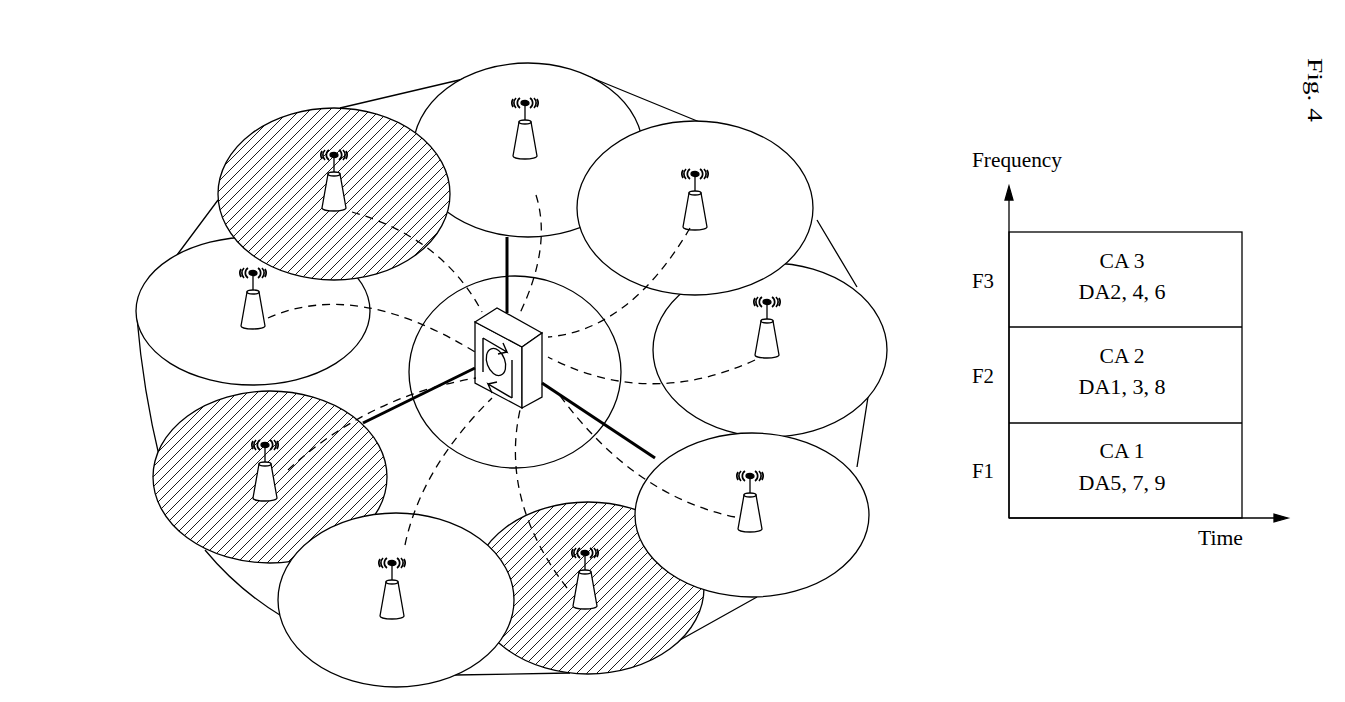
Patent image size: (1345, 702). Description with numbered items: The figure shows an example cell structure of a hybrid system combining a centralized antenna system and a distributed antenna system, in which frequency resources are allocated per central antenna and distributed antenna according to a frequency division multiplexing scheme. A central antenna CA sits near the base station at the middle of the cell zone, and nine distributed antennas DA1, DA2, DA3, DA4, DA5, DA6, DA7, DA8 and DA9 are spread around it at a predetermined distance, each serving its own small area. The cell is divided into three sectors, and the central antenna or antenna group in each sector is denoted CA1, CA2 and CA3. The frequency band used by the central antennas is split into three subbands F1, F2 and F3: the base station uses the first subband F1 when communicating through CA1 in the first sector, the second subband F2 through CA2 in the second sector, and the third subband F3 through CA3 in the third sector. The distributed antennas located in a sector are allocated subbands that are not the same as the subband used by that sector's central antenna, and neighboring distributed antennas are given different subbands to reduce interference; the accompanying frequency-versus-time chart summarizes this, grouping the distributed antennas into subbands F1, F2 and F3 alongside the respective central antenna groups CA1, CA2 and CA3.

The distributed antenna DA1 is at (528, 150).
The distributed antenna DA2 is at (334, 194).
The distributed antenna DA3 is at (253, 311).
The distributed antenna 4 (cell) DA4 is at (270, 477).
The distributed antenna 5 (cell) DA5 is at (396, 600).
The distributed antenna 6 (cell) DA6 is at (588, 588).
The distributed antenna 7 (cell) DA7 is at (752, 515).
The distributed antenna 8 (cell) DA8 is at (770, 350).
The distributed antenna 9 (cell) DA9 is at (695, 208).
The central antenna CA is at (559, 352).
The first central antenna CA1 is at (375, 282).
The second central antenna CA2 is at (486, 493).
The third central antenna CA3 is at (605, 268).
The first frequency subband F1 is at (382, 380).
The second frequency subband F2 is at (483, 478).
The third frequency subband F3 is at (646, 397).